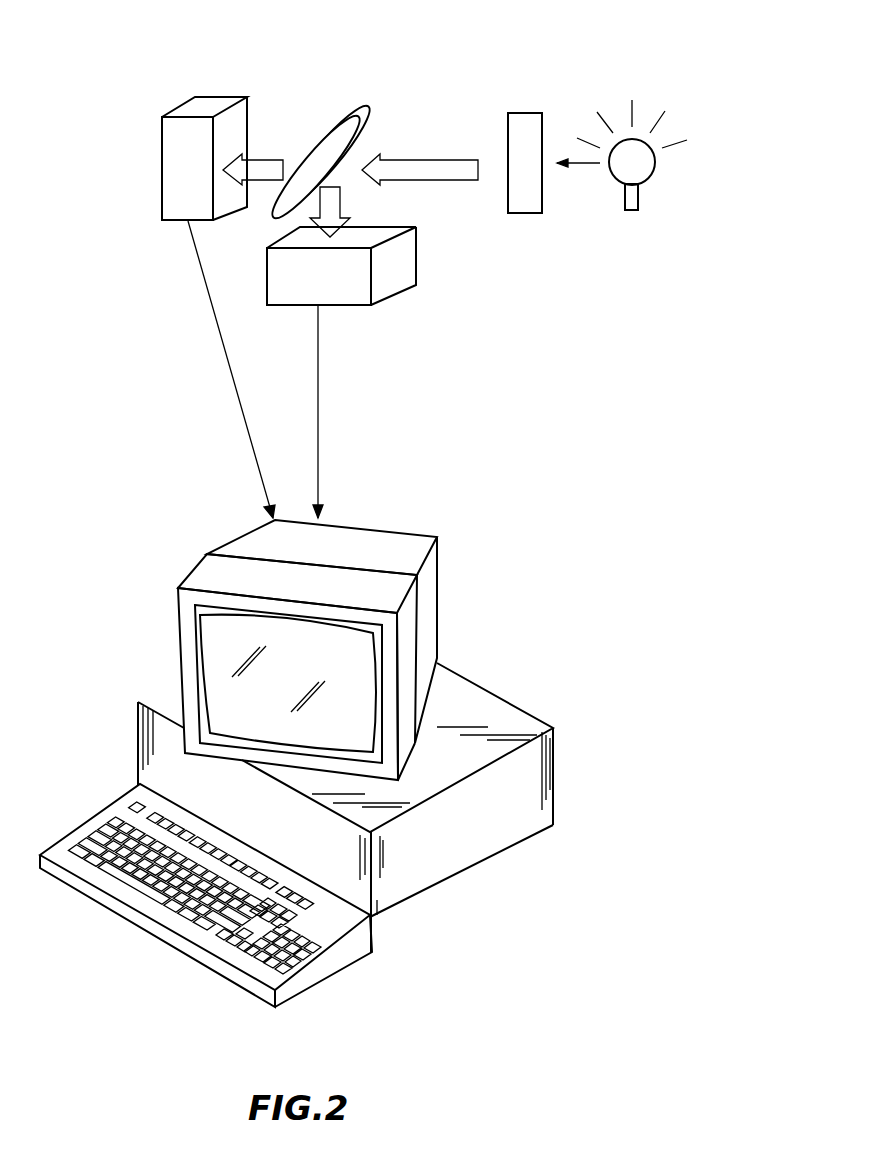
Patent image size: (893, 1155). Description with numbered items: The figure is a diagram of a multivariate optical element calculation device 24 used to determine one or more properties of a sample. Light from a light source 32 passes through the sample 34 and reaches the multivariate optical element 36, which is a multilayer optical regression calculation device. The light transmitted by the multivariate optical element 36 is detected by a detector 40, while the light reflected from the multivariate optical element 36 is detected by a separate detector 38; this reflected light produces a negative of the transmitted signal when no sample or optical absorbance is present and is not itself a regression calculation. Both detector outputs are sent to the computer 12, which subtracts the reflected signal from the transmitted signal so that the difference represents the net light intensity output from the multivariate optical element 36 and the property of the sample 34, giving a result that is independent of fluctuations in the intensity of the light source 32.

The computer 12 is at (463, 532).
The multivariate optical element calculation device 24 is at (415, 72).
The light source 32 is at (653, 172).
The sample 34 is at (530, 113).
The multivariate optical element 36 is at (313, 130).
The detector 38 is at (416, 257).
The detector 40 is at (162, 145).